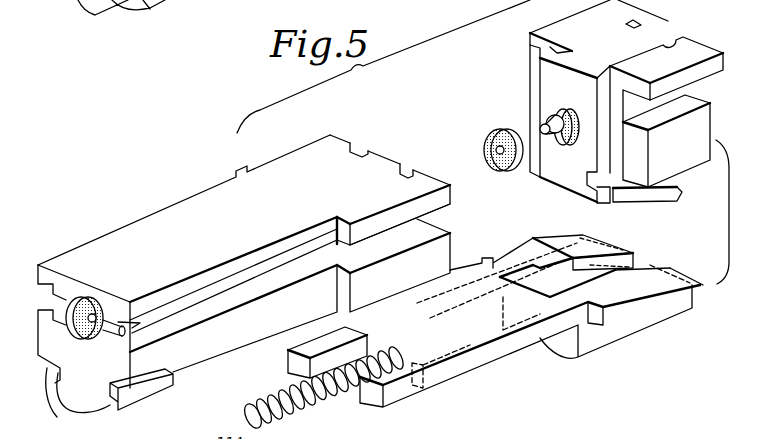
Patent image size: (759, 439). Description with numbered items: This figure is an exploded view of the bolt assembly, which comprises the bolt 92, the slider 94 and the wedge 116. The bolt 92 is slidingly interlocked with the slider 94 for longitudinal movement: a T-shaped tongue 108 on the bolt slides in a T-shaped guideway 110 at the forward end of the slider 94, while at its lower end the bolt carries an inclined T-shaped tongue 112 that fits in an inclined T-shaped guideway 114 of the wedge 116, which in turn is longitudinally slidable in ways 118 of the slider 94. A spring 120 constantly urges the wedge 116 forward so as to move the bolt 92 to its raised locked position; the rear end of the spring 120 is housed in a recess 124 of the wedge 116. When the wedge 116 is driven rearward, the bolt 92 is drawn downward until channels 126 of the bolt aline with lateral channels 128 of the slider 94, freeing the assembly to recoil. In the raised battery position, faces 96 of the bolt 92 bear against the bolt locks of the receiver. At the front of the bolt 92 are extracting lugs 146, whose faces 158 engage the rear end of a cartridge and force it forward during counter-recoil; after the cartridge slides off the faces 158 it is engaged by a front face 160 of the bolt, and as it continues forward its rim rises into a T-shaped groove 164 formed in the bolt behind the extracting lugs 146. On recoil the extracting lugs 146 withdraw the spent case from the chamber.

The bolt 92 is at (577, 22).
The slider 94 is at (121, 241).
The faces of the bolt 96 is at (532, 90).
The T-shaped tongue 108 is at (578, 62).
The T-shaped guideway 110 is at (385, 162).
The inclined T-shaped tongue 112 is at (613, 203).
The inclined T-shaped guideway 114 is at (557, 272).
The wedge 116 is at (500, 256).
The ways 118 is at (110, 397).
The spring 120 is at (330, 397).
The recess 124 is at (373, 326).
The channels of the bolt 126 is at (632, 108).
The lateral channels 128 is at (290, 254).
The extracting lugs 146 is at (642, 28).
The faces of the extracting lugs 158 is at (711, 36).
The front face of the bolt 160 is at (646, 12).
The T-shaped groove 164 is at (666, 34).